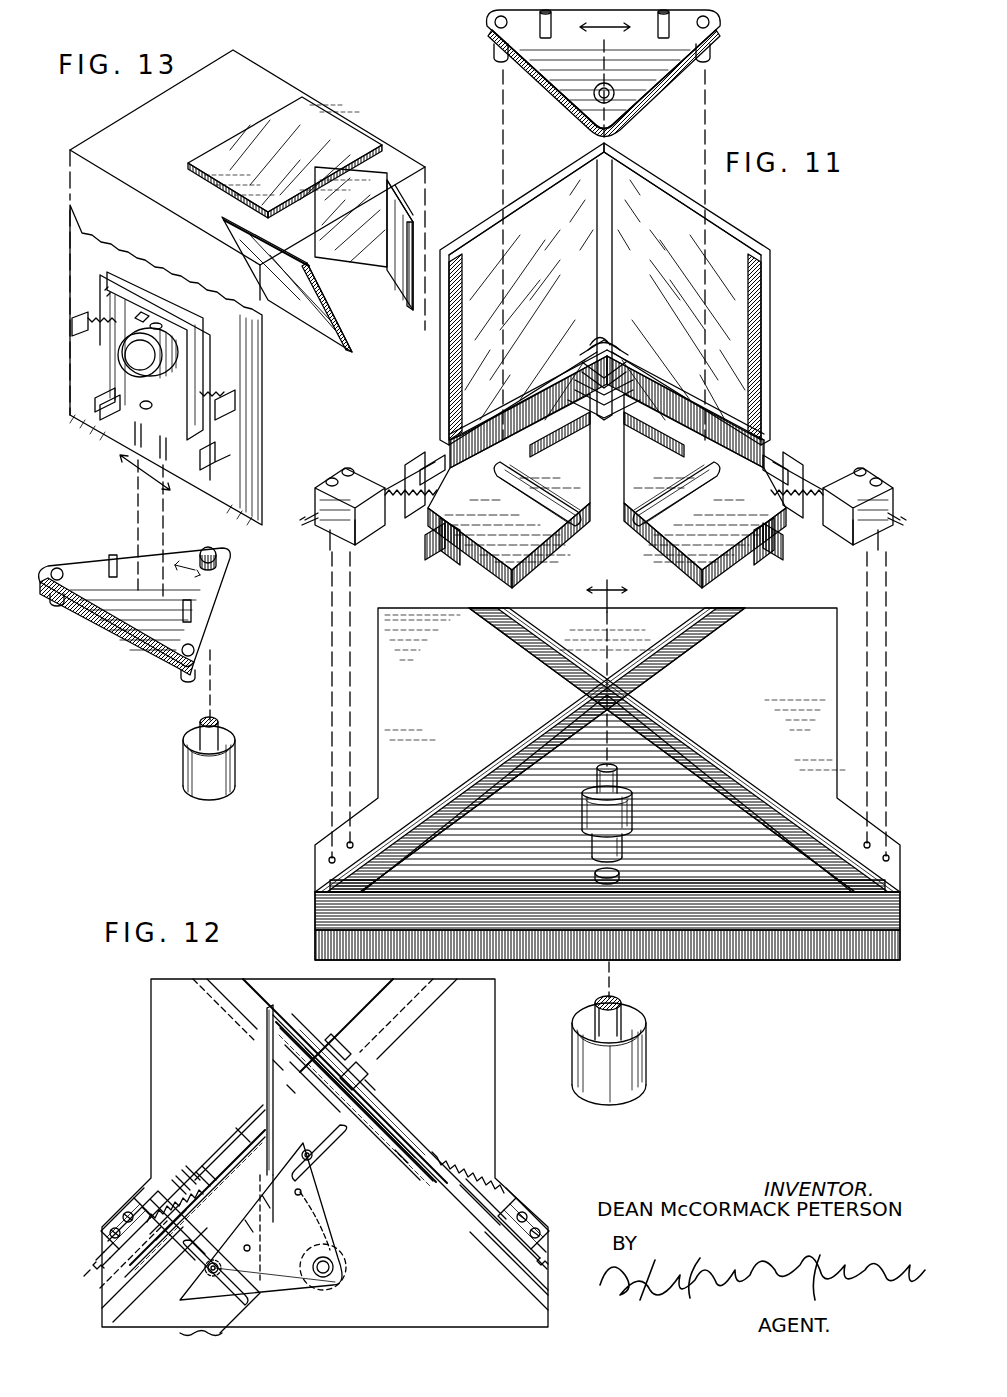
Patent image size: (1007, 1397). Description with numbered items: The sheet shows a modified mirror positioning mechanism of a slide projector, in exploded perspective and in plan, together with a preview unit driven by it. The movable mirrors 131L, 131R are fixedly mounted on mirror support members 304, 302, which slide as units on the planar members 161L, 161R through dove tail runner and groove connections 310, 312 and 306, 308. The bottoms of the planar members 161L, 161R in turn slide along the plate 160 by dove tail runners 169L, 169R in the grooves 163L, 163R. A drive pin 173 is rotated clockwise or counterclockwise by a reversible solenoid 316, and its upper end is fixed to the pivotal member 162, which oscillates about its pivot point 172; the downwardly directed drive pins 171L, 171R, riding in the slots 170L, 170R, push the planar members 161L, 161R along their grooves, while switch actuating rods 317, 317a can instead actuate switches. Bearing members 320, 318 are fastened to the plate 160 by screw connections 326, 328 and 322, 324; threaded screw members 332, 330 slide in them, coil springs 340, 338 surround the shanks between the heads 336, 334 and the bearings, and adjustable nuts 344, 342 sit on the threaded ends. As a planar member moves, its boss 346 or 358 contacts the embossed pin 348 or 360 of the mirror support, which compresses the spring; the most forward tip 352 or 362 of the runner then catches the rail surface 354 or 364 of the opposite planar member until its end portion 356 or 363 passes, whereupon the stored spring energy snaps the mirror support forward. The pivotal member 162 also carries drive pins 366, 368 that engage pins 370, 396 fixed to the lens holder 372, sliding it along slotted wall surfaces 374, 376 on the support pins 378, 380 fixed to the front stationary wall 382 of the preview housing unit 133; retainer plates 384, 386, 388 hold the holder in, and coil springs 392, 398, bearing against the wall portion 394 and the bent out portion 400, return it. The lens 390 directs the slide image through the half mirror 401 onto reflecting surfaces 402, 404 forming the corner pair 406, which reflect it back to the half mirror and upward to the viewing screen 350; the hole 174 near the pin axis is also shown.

In FIG. 13, the preview housing unit 133 is at (285, 62).
In FIG. 13, the viewing screen 350 is at (250, 136).
In FIG. 13, the corner pair 406 is at (392, 167).
In FIG. 13, the reflecting surface 404 is at (343, 232).
In FIG. 13, the reflecting surface 402 is at (396, 262).
In FIG. 13, the 50 percent mirror 401 is at (336, 310).
In FIG. 13, the lens holder support pin 378 is at (142, 318).
In FIG. 13, the retainer plate 384 is at (120, 272).
In FIG. 13, the front stationary wall 382 is at (86, 276).
In FIG. 13, the lens 390 is at (112, 305).
In FIG. 13, the portion of the front wall 394 is at (80, 310).
In FIG. 13, the coil spring 392 is at (100, 335).
In FIG. 13, the lens holder 372 is at (112, 398).
In FIG. 13, the slotted out wall surface 374 is at (160, 330).
In FIG. 13, the coil spring 398 is at (215, 392).
In FIG. 13, the bent out portion 400 is at (232, 410).
In FIG. 13, the retainer plate 388 is at (100, 412).
In FIG. 13, the lens holder support pin 380 is at (125, 432).
In FIG. 13, the pin 396 is at (135, 440).
In FIG. 13, the pin 370 is at (172, 462).
In FIG. 13, the slotted out wall surface 376 is at (160, 410).
In FIG. 13, the retainer plate 386 is at (214, 458).
In FIG. 11, the first drive pin 366 is at (497, 36).
In FIG. 13, the first drive pin 366 is at (195, 607).
In FIG. 12, the first drive pin 366 is at (240, 1290).
In FIG. 11, the second drive pin 368 is at (714, 37).
In FIG. 13, the second drive pin 368 is at (108, 562).
In FIG. 12, the second drive pin 368 is at (318, 1225).
In FIG. 11, the drive pin 171L is at (496, 55).
In FIG. 13, the drive pin 171L is at (182, 680).
In FIG. 12, the drive pin 171L is at (212, 1278).
In FIG. 11, the drive pin 171R is at (712, 58).
In FIG. 13, the drive pin 171R is at (58, 604).
In FIG. 12, the drive pin 171R is at (314, 1162).
In FIG. 11, the pivot point 172 is at (590, 100).
In FIG. 13, the pivot point 172 is at (216, 553).
In FIG. 12, the pivot point 172 is at (334, 1272).
In FIG. 11, the pivotal member 162 is at (648, 92).
In FIG. 13, the pivotal member 162 is at (135, 612).
In FIG. 12, the pivotal member 162 is at (325, 1290).
In FIG. 11, the drive pin 173 is at (635, 805).
In FIG. 13, the drive pin 173 is at (205, 697).
In FIG. 12, the drive pin 173 is at (334, 1264).
In FIG. 11, the pivot hole 174 is at (592, 866).
In FIG. 11, the reversible solenoid 316 is at (648, 1046).
In FIG. 13, the reversible solenoid 316 is at (196, 768).
In FIG. 11, the movable mirror 131L is at (578, 210).
In FIG. 12, the movable mirror 131L is at (247, 1150).
In FIG. 11, the movable mirror 131R is at (660, 210).
In FIG. 12, the movable mirror 131R is at (372, 1124).
In FIG. 11, the most forward tip 362 is at (590, 342).
In FIG. 12, the most forward tip 362 is at (262, 1018).
In FIG. 11, the most forward tip 352 is at (614, 348).
In FIG. 12, the most forward tip 352 is at (273, 1170).
In FIG. 11, the switch actuating rod 317a is at (592, 352).
In FIG. 12, the switch actuating rod 317a is at (270, 1185).
In FIG. 11, the switch actuating rod 317 is at (622, 355).
In FIG. 12, the switch actuating rod 317 is at (264, 1054).
In FIG. 11, the end portion 363 is at (592, 368).
In FIG. 12, the end portion 363 is at (264, 1200).
In FIG. 11, the end portion 356 is at (630, 368).
In FIG. 12, the end portion 356 is at (272, 1066).
In FIG. 11, the rail surface 364 is at (522, 400).
In FIG. 12, the rail surface 364 is at (247, 1226).
In FIG. 11, the rail surface 354 is at (690, 400).
In FIG. 12, the rail surface 354 is at (288, 1086).
In FIG. 12, the boss 358 is at (335, 1056).
In FIG. 12, the embossed pin shaped portion 360 is at (382, 1064).
In FIG. 11, the mirror support member 304 is at (438, 448).
In FIG. 12, the mirror support member 304 is at (243, 1132).
In FIG. 11, the coil spring 340 is at (445, 458).
In FIG. 12, the coil spring 340 is at (150, 1212).
In FIG. 11, the dove tail runner 310 is at (430, 468).
In FIG. 11, the threaded screw connection 328 is at (335, 480).
In FIG. 12, the threaded screw connection 328 is at (110, 1238).
In FIG. 11, the threaded screw connection 326 is at (375, 470).
In FIG. 12, the threaded screw connection 326 is at (128, 1212).
In FIG. 11, the mirror support member 302 is at (777, 448).
In FIG. 12, the mirror support member 302 is at (372, 1086).
In FIG. 11, the coil spring 338 is at (785, 455).
In FIG. 12, the coil spring 338 is at (474, 1212).
In FIG. 11, the dove tail runner 306 is at (795, 468).
In FIG. 11, the threaded screw connection 324 is at (878, 478).
In FIG. 12, the threaded screw connection 324 is at (541, 1235).
In FIG. 11, the threaded screw connection 322 is at (870, 478).
In FIG. 12, the threaded screw connection 322 is at (503, 1218).
In FIG. 11, the slot 170L is at (530, 492).
In FIG. 12, the slot 170L is at (196, 1262).
In FIG. 11, the slot 170R is at (690, 490).
In FIG. 12, the slot 170R is at (306, 1148).
In FIG. 11, the bearing member 320 is at (356, 506).
In FIG. 12, the bearing member 320 is at (113, 1230).
In FIG. 11, the adjustable nut 344 is at (395, 530).
In FIG. 12, the adjustable nut 344 is at (98, 1262).
In FIG. 11, the dove tail groove 312 is at (424, 542).
In FIG. 12, the dove tail groove 312 is at (150, 1240).
In FIG. 11, the threaded screw member 332 is at (325, 532).
In FIG. 12, the threaded screw member 332 is at (86, 1275).
In FIG. 11, the planar member 161L is at (560, 540).
In FIG. 12, the planar member 161L is at (238, 1155).
In FIG. 11, the dove tail runner 169L is at (436, 552).
In FIG. 11, the planar member 161R is at (680, 556).
In FIG. 12, the planar member 161R is at (295, 1018).
In FIG. 11, the dove tail runner 169R is at (775, 552).
In FIG. 11, the bearing member 318 is at (855, 510).
In FIG. 12, the bearing member 318 is at (530, 1232).
In FIG. 11, the dove tail groove 308 is at (790, 520).
In FIG. 12, the dove tail groove 308 is at (402, 1156).
In FIG. 11, the adjustable nut 342 is at (866, 545).
In FIG. 12, the adjustable nut 342 is at (548, 1256).
In FIG. 11, the threaded screw member 330 is at (888, 556).
In FIG. 12, the threaded screw member 330 is at (548, 1264).
In FIG. 11, the dove tail groove 163R is at (550, 668).
In FIG. 12, the dove tail groove 163R is at (235, 998).
In FIG. 11, the dove tail groove 163L is at (650, 662).
In FIG. 12, the dove tail groove 163L is at (420, 997).
In FIG. 11, the plate 160 is at (740, 898).
In FIG. 12, the plate 160 is at (158, 1050).
In FIG. 12, the head 334 is at (425, 1180).
In FIG. 12, the head 336 is at (180, 1186).
In FIG. 12, the boss 346 is at (196, 1176).
In FIG. 12, the embossed pin shaped portion 348 is at (180, 1174).